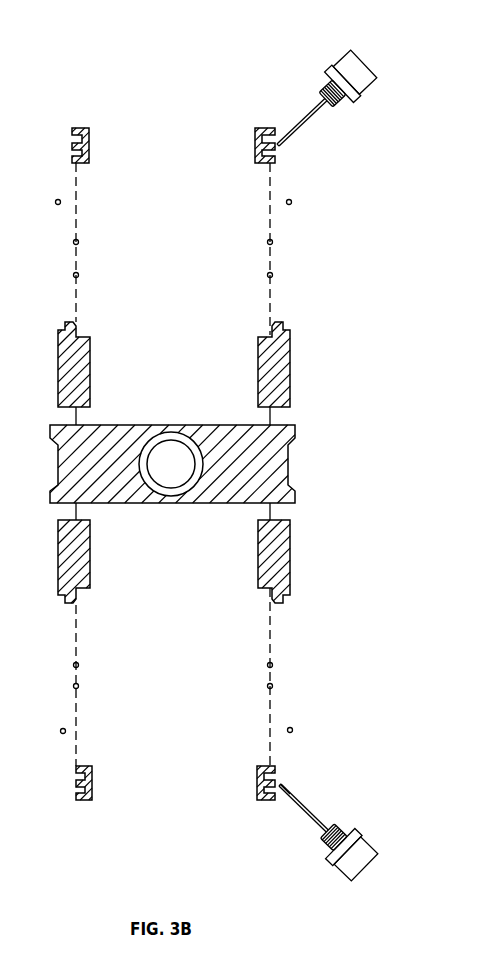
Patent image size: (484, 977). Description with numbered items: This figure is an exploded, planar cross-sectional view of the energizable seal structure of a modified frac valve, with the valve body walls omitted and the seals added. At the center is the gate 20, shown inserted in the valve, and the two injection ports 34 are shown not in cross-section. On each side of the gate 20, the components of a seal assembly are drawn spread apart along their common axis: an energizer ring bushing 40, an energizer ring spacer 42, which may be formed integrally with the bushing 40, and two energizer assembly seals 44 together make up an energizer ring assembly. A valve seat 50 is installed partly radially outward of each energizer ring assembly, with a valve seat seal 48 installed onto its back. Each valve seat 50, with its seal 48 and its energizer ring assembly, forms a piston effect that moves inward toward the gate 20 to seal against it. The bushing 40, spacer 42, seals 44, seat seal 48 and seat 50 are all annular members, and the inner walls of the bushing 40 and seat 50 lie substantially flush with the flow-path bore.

The gate 20 is at (293, 460).
The injection ports 34 is at (365, 63).
The energizer ring bushing 40 is at (257, 781).
The energizer ring spacer 42 is at (279, 782).
The energizer assembly seals 44 is at (273, 687).
The valve seat seal 48 is at (293, 728).
The valve seat 50 is at (292, 552).